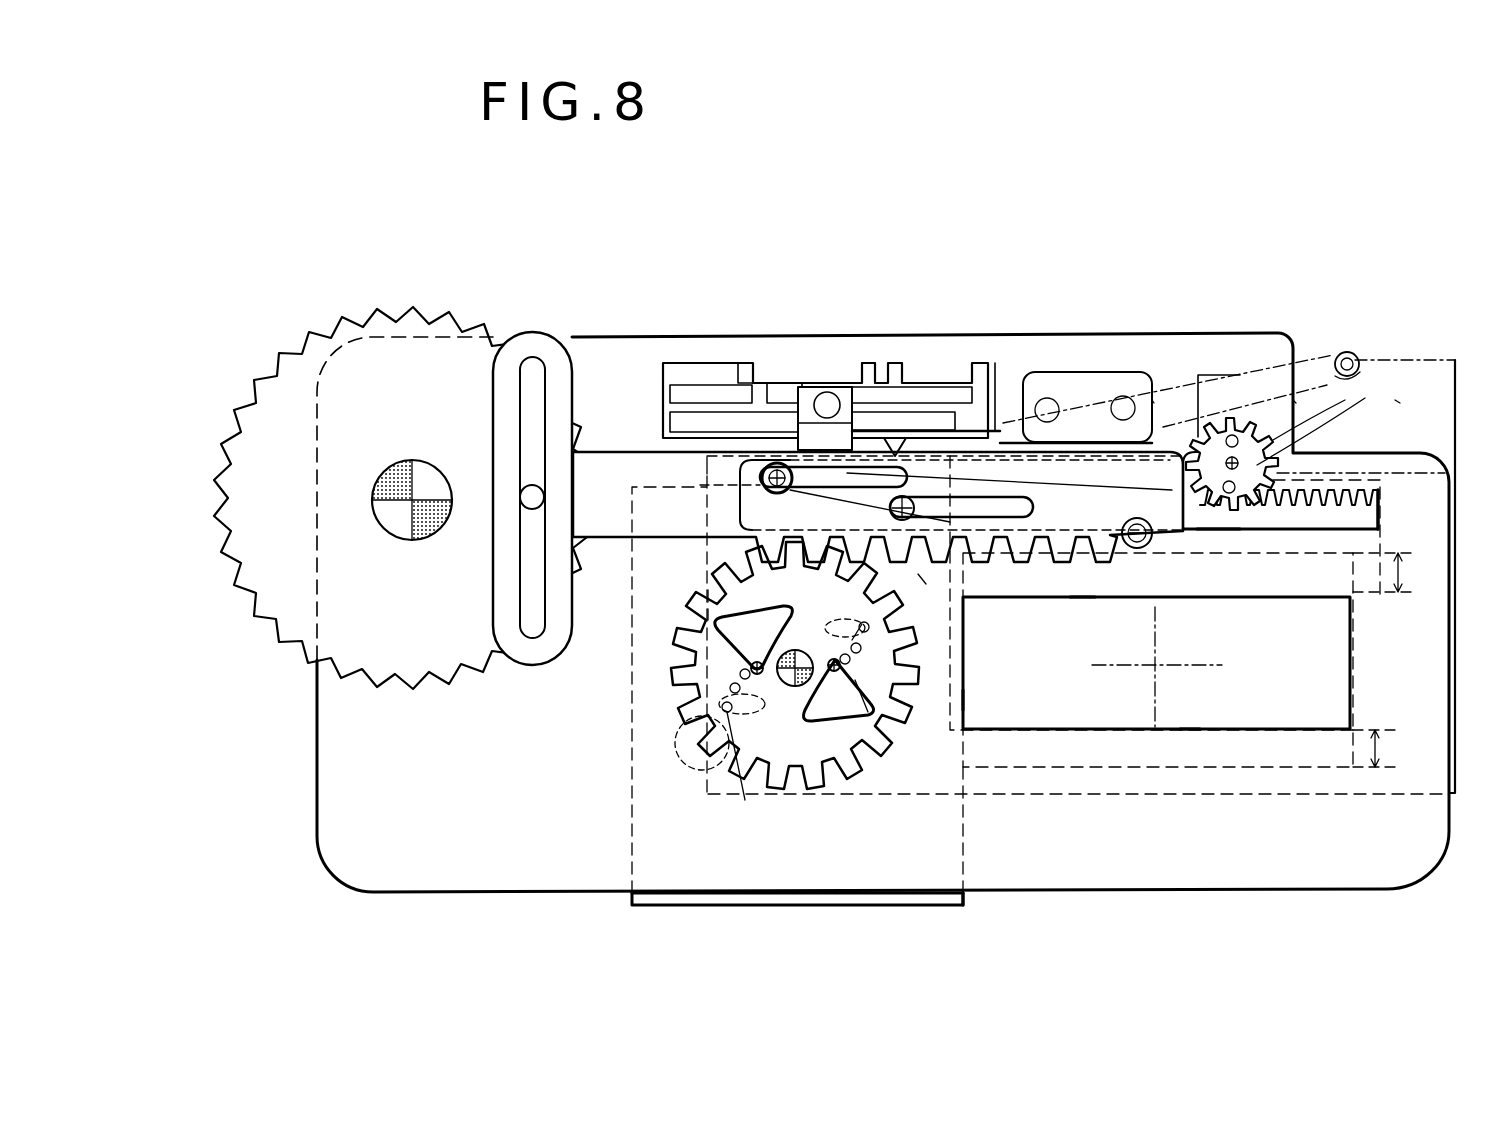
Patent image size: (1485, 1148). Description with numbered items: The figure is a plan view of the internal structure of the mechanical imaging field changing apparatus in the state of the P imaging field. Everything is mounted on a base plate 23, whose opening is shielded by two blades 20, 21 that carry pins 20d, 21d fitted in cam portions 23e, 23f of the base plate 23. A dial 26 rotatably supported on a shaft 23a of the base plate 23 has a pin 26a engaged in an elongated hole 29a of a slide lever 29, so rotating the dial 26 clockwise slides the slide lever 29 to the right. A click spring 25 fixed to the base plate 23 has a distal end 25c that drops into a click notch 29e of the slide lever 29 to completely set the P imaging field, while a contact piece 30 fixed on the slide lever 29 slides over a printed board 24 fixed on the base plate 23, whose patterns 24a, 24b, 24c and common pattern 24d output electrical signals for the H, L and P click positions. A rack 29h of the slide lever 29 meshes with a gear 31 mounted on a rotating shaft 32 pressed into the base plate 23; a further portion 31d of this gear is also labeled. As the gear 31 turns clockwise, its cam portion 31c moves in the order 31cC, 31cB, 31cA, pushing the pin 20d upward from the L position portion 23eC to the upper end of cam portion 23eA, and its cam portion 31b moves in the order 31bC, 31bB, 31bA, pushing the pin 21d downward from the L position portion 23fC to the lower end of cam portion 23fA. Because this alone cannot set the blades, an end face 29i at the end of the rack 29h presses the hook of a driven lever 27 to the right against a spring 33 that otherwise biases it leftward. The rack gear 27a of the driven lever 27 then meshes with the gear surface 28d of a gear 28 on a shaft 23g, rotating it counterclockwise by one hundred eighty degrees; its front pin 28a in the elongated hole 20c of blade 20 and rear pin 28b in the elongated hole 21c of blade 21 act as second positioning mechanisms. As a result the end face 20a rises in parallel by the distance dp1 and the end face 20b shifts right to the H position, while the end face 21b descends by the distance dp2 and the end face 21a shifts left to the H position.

The blade 20 is at (1452, 395).
The end face of blade 20a is at (1190, 730).
The end face of blade 20b is at (1349, 667).
The elongated hole 20c is at (1350, 375).
The pin 20d is at (712, 605).
The blade 21 is at (1282, 592).
The end face of blade 21a is at (965, 698).
The end face of blade 21b is at (1080, 598).
The elongated hole 21c is at (1152, 405).
The pin 21d is at (852, 680).
The base plate 23 is at (1017, 452).
The shaft 23a is at (390, 463).
The cam portion 23e is at (757, 778).
The cam portion 23eA is at (708, 745).
The L position portion 23eC is at (727, 712).
The cam portion 23f is at (860, 620).
The cam portion 23fA is at (861, 648).
The L position portion 23fC is at (869, 626).
The shaft 23g is at (1295, 400).
The printed board 24 is at (687, 375).
The pattern 24a is at (745, 365).
The pattern 24b is at (870, 370).
The pattern 24c is at (893, 370).
The common pattern 24d is at (985, 375).
The click spring 25 is at (1090, 380).
The distal end of click spring 25c is at (897, 438).
The dial 26 is at (262, 420).
The pin 26a is at (527, 487).
The driven lever 27 is at (1197, 534).
The rack gear 27a is at (1381, 512).
The gear 28 is at (1236, 443).
The pin 28a is at (1262, 430).
The pin 28b is at (1395, 400).
The gear surface 28d is at (1215, 425).
The slide lever 29 is at (520, 350).
The elongated hole 29a is at (535, 400).
The click notch 29e is at (805, 445).
The rack 29h is at (1035, 515).
The lock portion 29i is at (1150, 545).
The contact piece 30 is at (813, 392).
The gear 31 is at (790, 690).
The cam portion 31b is at (842, 688).
The cam portion 31bA is at (856, 680).
The cam portion 31bB is at (853, 720).
The cam portion 31bC is at (849, 661).
The cam portion 31c is at (716, 626).
The cam portion 31cA is at (752, 668).
The cam portion 31cB is at (733, 690).
The cam portion 31cC is at (724, 710).
The pawl lever edge 31d is at (925, 578).
The rotating shaft 32 is at (798, 688).
The spring 33 is at (1083, 378).
The distance dp1 is at (1397, 748).
The distance dp2 is at (1407, 572).